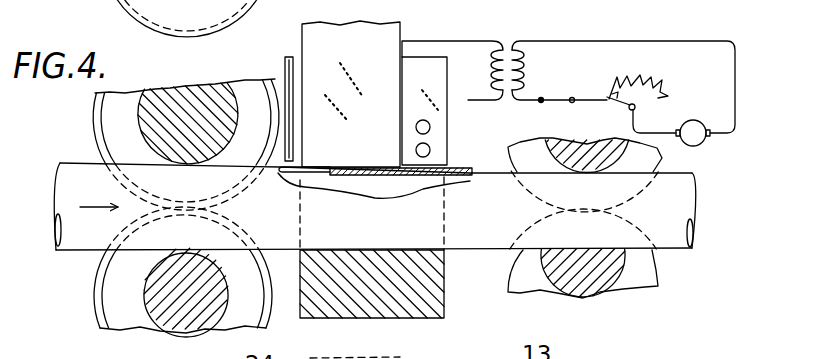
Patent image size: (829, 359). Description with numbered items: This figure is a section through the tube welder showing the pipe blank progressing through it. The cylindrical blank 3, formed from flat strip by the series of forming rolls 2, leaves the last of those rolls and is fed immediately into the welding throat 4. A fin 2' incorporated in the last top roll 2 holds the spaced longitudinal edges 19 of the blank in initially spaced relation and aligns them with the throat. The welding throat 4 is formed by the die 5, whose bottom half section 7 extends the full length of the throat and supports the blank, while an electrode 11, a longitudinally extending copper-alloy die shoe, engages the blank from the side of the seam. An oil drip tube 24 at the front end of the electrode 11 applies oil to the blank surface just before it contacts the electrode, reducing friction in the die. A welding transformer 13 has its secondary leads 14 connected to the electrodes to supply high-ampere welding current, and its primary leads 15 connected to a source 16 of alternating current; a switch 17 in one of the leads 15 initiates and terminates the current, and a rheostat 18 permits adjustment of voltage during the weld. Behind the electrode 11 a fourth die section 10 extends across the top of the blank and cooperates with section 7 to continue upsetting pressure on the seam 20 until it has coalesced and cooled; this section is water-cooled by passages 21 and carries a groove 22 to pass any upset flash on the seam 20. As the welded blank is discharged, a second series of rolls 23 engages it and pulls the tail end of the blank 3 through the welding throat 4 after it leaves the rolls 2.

The forming rolls 2 is at (166, 208).
The fin 2' is at (201, 123).
The cylindrical blank 3 is at (74, 252).
The welding throat 4 is at (432, 242).
The die 5 is at (448, 300).
The bottom half section 7 is at (395, 320).
The fourth die section 10 is at (440, 110).
The electrode 11 is at (390, 82).
The welding transformer 13 is at (509, 40).
The secondary leads 14 is at (479, 97).
The primary leads 15 is at (597, 43).
The source of alternating current 16 is at (693, 119).
The switch 17 is at (553, 97).
The rheostat 18 is at (621, 106).
The longitudinal edges 19 is at (288, 174).
The seam 20 is at (394, 186).
The passages 21 is at (416, 150).
The groove 22 is at (437, 166).
The second series of rolls 23 is at (633, 165).
The oil drip tube 24 is at (284, 64).